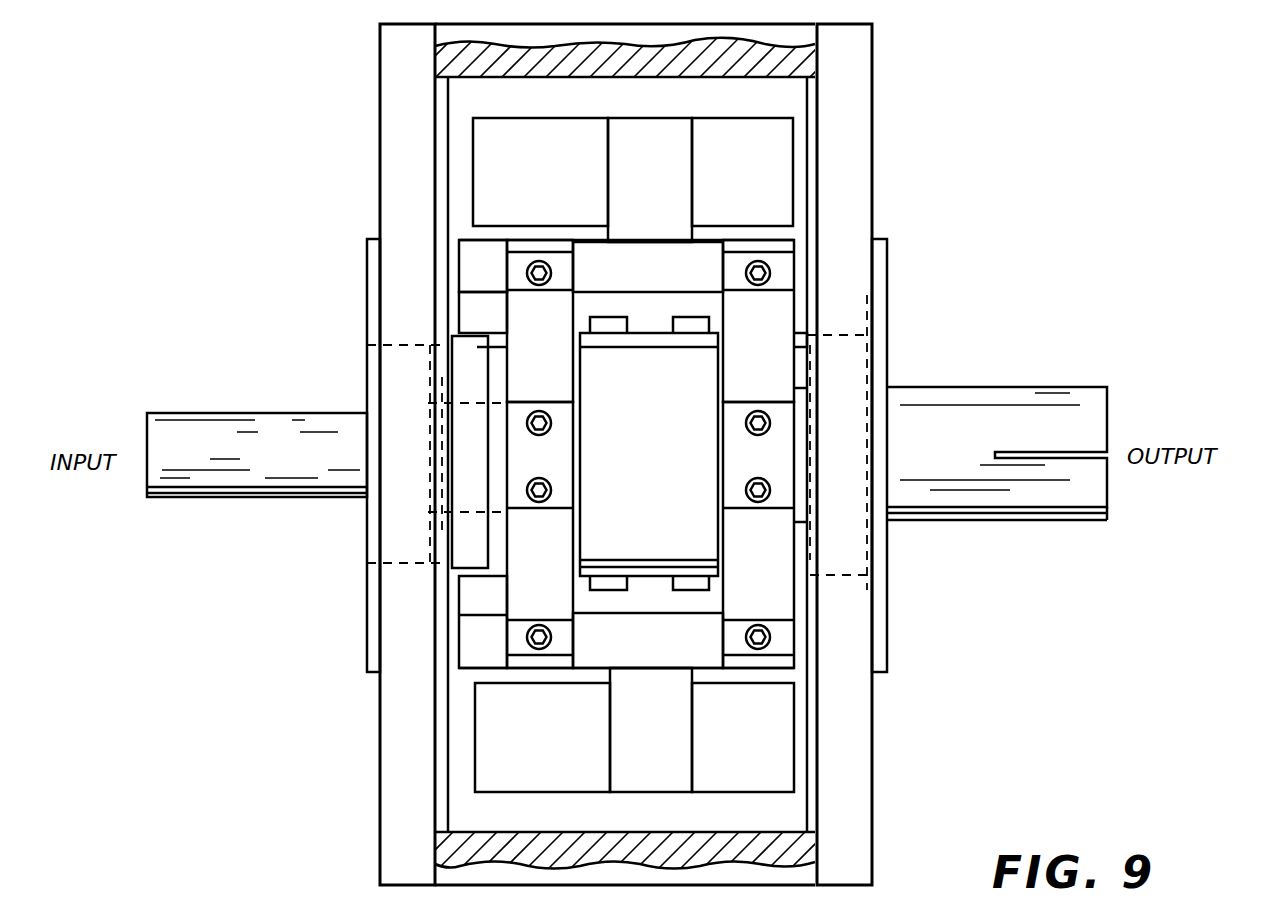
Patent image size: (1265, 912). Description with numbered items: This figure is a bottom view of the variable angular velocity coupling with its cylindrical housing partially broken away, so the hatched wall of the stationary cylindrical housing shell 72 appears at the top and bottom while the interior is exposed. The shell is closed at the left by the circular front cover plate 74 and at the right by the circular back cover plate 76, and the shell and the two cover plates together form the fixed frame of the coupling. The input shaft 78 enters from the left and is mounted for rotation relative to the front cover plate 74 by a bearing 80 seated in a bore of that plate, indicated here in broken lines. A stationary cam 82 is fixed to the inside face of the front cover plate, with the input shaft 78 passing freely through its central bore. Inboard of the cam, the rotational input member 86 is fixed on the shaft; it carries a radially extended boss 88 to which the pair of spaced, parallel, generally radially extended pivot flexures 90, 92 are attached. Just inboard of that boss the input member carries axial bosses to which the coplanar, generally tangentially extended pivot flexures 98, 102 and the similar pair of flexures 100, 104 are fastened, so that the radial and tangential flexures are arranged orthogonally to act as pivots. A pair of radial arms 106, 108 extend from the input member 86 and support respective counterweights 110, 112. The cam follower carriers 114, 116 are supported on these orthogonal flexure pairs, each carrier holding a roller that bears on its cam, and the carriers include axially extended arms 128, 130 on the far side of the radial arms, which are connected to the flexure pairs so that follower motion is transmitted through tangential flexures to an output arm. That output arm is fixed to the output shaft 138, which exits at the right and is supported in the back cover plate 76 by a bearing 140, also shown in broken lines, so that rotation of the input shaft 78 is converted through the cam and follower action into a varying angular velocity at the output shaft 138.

The cylindrical housing shell 72 is at (457, 873).
The front cover plate 74 is at (397, 742).
The back cover plate 76 is at (862, 766).
The input shaft 78 is at (272, 502).
The bearing 80 is at (383, 545).
The stationary cam 82 is at (495, 380).
The rotational input member 86 is at (592, 443).
The radially extended boss 88 is at (665, 521).
The pivot flexure 90 is at (643, 563).
The pivot flexure 92 is at (668, 345).
The pivot flexure 98 is at (556, 603).
The pivot flexure 100 is at (782, 353).
The pivot flexure 102 is at (561, 353).
The pivot flexure 104 is at (780, 601).
The radial arm 106 is at (680, 778).
The radial arm 108 is at (670, 128).
The counterweight 110 is at (567, 778).
The counterweight 112 is at (542, 138).
The cam follower carrier 114 is at (473, 652).
The cam follower carrier 116 is at (468, 270).
The axially extended arm 128 is at (678, 658).
The axially extended arm 130 is at (700, 252).
The output shaft 138 is at (957, 520).
The bearing 140 is at (873, 345).